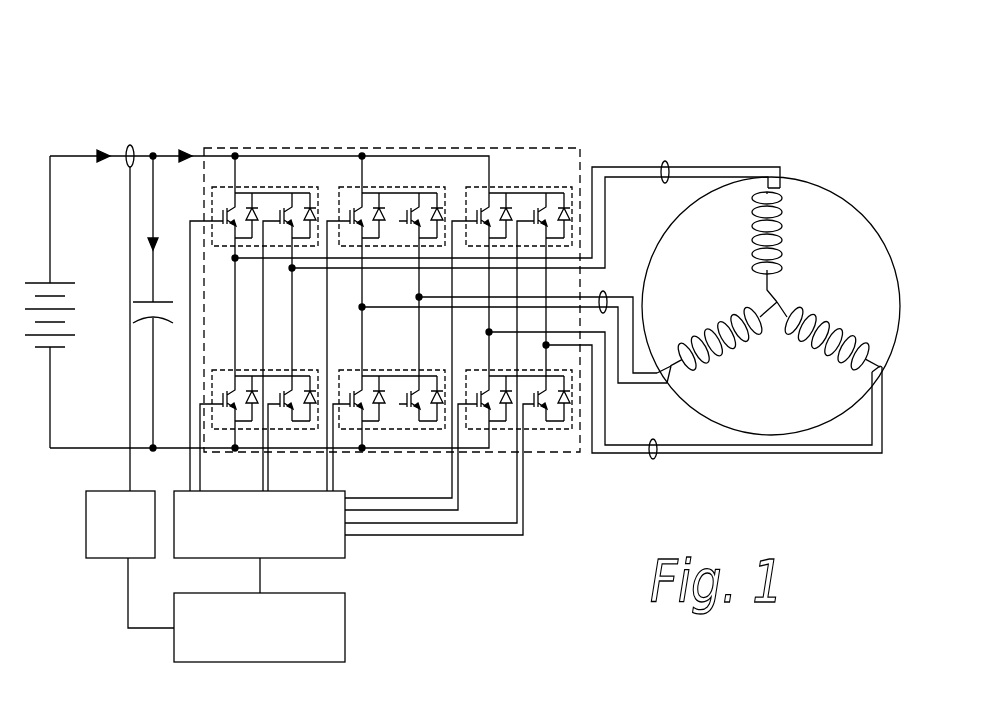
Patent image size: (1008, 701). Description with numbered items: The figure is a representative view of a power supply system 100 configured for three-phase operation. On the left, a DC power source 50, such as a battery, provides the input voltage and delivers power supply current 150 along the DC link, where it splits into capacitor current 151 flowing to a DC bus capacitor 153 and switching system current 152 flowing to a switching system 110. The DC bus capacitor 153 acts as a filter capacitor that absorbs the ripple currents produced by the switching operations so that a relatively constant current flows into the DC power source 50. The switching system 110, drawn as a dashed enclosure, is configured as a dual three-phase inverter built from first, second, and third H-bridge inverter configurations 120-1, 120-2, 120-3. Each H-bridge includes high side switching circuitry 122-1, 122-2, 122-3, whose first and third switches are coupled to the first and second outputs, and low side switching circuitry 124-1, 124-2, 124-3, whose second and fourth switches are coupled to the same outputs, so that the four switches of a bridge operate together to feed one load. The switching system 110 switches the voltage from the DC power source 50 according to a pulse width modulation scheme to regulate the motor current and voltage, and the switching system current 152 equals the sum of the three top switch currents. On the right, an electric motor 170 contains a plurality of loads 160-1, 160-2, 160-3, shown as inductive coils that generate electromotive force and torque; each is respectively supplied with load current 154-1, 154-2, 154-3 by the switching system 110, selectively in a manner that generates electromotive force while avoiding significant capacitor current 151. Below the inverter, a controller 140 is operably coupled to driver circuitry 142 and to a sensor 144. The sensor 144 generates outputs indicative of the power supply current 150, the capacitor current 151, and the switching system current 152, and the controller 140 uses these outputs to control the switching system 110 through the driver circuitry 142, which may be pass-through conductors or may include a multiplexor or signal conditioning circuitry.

The power supply system 100 is at (500, 56).
The DC power source 50 is at (62, 365).
The switching system 110 is at (562, 147).
The first H-bridge inverter configuration 120-1 is at (278, 285).
The second H-bridge inverter configuration 120-2 is at (398, 286).
The third H-bridge inverter configuration 120-3 is at (532, 311).
The high side switching circuitry 122-1 is at (295, 187).
The high side switching circuitry 122-2 is at (432, 187).
The high side switching circuitry 122-3 is at (540, 187).
The low side switching circuitry 124-1 is at (212, 417).
The low side switching circuitry 124-2 is at (435, 430).
The low side switching circuitry 124-3 is at (570, 429).
The controller 140 is at (346, 615).
The driver circuitry 142 is at (346, 545).
The sensor 144 is at (108, 560).
The power supply current 150 is at (112, 126).
The capacitor current 151 is at (126, 170).
The switching system current 152 is at (187, 126).
The DC bus capacitor 153 is at (163, 318).
The load current 154-1 is at (668, 143).
The load current 154-2 is at (628, 262).
The load current 154-3 is at (657, 460).
The load 160-1 is at (785, 230).
The load 160-2 is at (718, 355).
The load 160-3 is at (815, 315).
The electric motor 170 is at (890, 168).